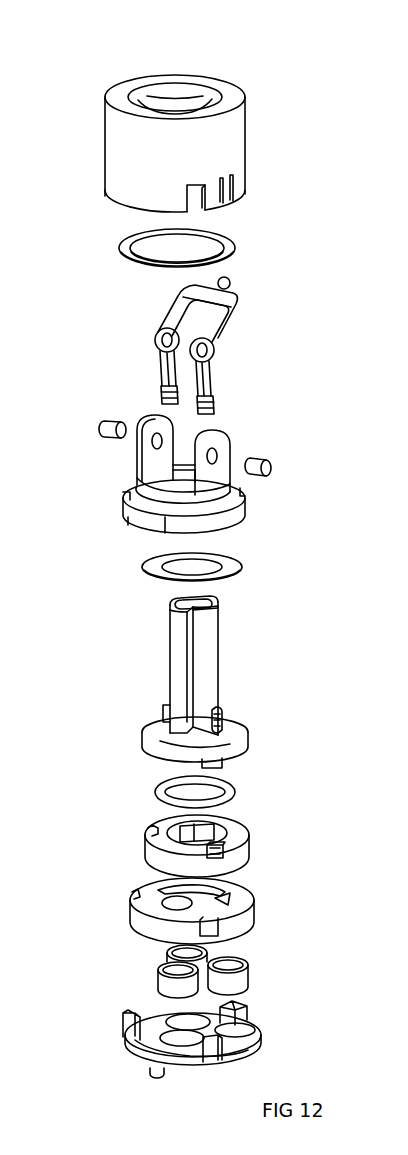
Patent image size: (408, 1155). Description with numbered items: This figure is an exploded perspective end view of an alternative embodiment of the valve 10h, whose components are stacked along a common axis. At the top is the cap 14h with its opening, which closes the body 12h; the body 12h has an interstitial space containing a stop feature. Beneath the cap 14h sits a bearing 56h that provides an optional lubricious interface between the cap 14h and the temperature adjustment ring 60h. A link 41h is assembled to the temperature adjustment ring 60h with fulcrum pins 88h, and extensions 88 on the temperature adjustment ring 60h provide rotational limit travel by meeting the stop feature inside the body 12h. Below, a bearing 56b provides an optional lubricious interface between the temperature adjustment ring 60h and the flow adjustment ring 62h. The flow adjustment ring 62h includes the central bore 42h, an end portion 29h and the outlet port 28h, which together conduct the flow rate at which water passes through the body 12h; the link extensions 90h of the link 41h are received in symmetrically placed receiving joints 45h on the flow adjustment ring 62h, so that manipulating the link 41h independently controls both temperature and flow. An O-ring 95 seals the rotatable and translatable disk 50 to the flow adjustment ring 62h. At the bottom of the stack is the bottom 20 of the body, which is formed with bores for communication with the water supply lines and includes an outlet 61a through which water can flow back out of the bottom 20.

The valve 10h is at (265, 90).
The body 12h is at (217, 120).
The cap 14h is at (188, 80).
The bearing 56h is at (222, 240).
The link 41h is at (205, 344).
The link extensions 90h is at (160, 395).
The fulcrum pins 88h is at (114, 420).
The temperature adjustment ring 60h is at (220, 491).
The extensions 88 is at (137, 528).
The bearing 56b is at (232, 562).
The central bore 42h is at (205, 659).
The outlet port 28h is at (200, 604).
The end portion 29h is at (220, 604).
The receiving joints 45h is at (162, 712).
The flow adjustment ring 62h is at (250, 740).
The O-ring 95 is at (235, 790).
The rotatable and translatable disk 50 is at (248, 846).
The bottom 20 is at (177, 1039).
The outlet 61a is at (170, 1035).